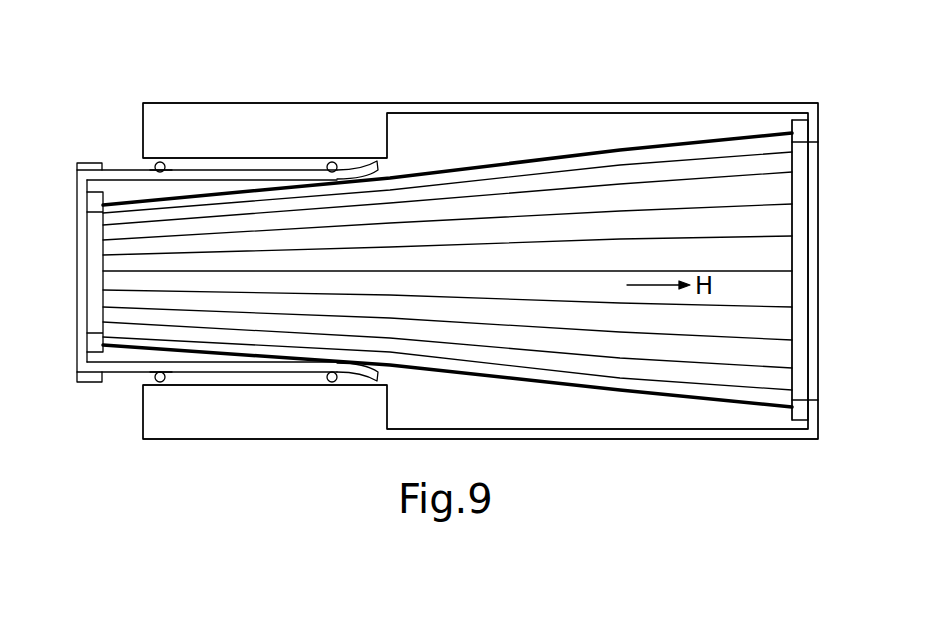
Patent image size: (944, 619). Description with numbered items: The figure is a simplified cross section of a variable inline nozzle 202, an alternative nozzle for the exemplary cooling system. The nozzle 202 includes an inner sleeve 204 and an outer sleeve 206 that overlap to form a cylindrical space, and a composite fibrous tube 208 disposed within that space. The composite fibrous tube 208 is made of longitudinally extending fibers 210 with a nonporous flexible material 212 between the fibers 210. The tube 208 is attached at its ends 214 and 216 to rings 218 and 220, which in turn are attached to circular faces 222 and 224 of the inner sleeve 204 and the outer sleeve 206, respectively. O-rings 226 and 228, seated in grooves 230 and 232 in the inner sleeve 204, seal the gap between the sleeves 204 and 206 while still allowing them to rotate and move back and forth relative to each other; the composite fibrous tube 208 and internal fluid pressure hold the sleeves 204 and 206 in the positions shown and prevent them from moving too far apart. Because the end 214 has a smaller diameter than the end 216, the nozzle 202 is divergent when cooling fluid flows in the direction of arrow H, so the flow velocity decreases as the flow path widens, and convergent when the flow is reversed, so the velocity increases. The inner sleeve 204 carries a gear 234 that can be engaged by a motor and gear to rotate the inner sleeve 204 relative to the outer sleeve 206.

The variable inline nozzle 202 is at (260, 69).
The inner sleeve 204 is at (135, 177).
The outer sleeve 206 is at (400, 108).
The composite fibrous tube 208 is at (517, 152).
The fibers 210 is at (705, 178).
The nonporous flexible material 212 is at (623, 200).
The end 214 is at (103, 264).
The end 216 is at (793, 283).
The ring 218 is at (100, 242).
The ring 220 is at (801, 238).
The circular face 222 is at (85, 222).
The circular face 224 is at (815, 200).
The O-ring 226 is at (160, 161).
The O-ring 228 is at (330, 160).
The groove 230 is at (166, 167).
The groove 232 is at (331, 166).
The gear 234 is at (88, 164).